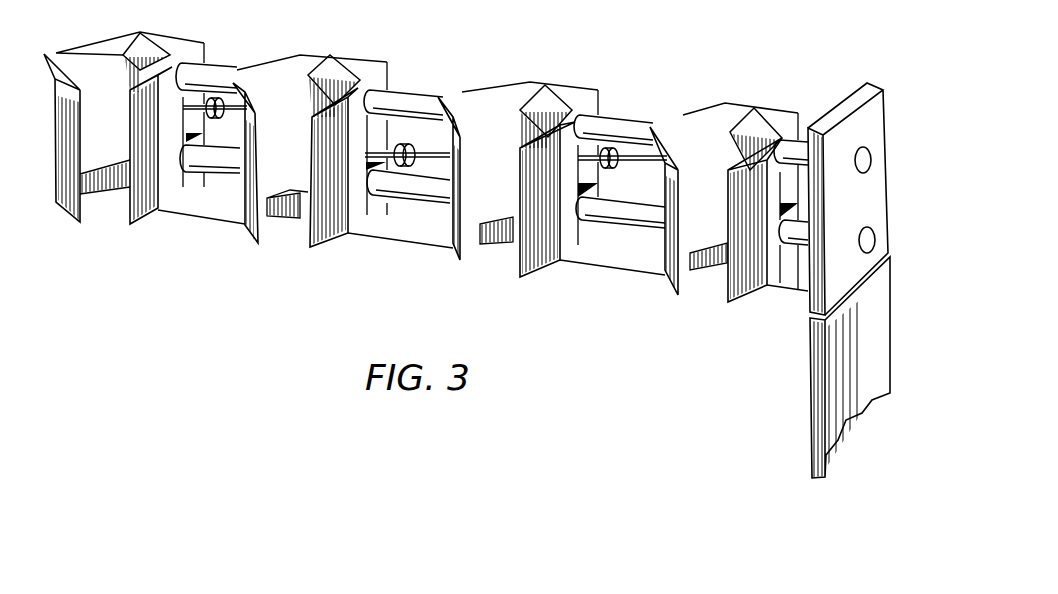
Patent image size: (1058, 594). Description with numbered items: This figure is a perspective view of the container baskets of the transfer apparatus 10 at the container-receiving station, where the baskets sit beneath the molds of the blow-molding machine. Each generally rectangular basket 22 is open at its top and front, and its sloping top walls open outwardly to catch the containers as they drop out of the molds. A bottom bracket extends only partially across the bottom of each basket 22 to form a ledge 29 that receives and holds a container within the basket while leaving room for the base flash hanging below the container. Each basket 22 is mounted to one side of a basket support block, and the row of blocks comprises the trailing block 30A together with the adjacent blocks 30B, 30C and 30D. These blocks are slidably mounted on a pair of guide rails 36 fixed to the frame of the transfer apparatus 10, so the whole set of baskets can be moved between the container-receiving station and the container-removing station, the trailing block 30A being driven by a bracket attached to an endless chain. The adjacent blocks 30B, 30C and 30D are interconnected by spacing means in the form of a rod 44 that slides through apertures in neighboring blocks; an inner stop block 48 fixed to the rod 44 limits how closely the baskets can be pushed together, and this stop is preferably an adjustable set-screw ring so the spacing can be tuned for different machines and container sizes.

The transfer apparatus 10 is at (924, 283).
The basket 22 is at (100, 134).
The ledge 29 is at (296, 203).
The trailing block 30A is at (781, 110).
The basket support block 30B is at (600, 98).
The basket support block 30C is at (393, 72).
The basket support block 30D is at (178, 36).
The guide rails 36 is at (230, 160).
The rod 44 is at (430, 153).
The inner stop block 48 is at (410, 145).